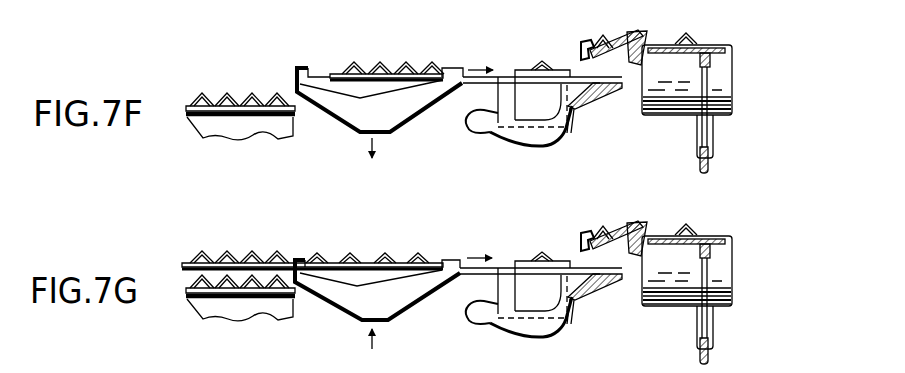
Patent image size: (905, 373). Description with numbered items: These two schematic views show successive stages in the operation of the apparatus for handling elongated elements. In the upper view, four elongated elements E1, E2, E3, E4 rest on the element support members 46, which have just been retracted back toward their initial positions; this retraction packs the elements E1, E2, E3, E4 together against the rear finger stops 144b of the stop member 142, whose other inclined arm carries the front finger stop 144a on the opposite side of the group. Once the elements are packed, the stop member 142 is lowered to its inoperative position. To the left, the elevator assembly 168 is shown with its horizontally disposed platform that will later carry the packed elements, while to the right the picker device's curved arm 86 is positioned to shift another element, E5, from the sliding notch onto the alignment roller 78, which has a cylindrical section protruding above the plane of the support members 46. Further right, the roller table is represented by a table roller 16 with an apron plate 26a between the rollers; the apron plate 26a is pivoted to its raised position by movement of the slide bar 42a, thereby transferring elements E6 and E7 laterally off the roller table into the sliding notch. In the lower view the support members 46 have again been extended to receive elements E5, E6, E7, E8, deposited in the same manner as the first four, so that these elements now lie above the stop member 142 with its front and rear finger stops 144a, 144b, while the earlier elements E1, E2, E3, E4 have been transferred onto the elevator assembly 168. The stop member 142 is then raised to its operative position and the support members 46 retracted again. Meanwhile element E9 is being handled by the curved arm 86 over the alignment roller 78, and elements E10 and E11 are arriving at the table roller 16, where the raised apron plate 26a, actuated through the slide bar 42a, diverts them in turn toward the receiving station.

In FIG. 7F, the table roller 16 is at (733, 88).
In FIG. 7G, the table roller 16 is at (705, 271).
In FIG. 7G, the apron plate 26a is at (707, 239).
In FIG. 7F, the slide bar 42a is at (713, 163).
In FIG. 7F, the element support member 46 is at (468, 85).
In FIG. 7G, the element support member 46 is at (470, 275).
In FIG. 7F, the alignment roller 78 is at (574, 134).
In FIG. 7G, the alignment roller 78 is at (594, 316).
In FIG. 7F, the curved arm 86 is at (537, 136).
In FIG. 7G, the curved arm 86 is at (533, 314).
In FIG. 7F, the stop member 142 is at (404, 125).
In FIG. 7G, the stop member 142 is at (403, 318).
In FIG. 7F, the front finger stop 144a is at (297, 67).
In FIG. 7G, the front finger stop 144a is at (297, 259).
In FIG. 7F, the rear finger stop 144b is at (454, 70).
In FIG. 7G, the rear finger stop 144b is at (449, 258).
In FIG. 7F, the elevator assembly 168 is at (234, 141).
In FIG. 7G, the elevator assembly 168 is at (224, 322).
In FIG. 7F, the elongated element E1 is at (355, 61).
In FIG. 7G, the elongated element E1 is at (200, 251).
In FIG. 7F, the elongated element E2 is at (381, 61).
In FIG. 7G, the elongated element E2 is at (227, 251).
In FIG. 7F, the elongated element E3 is at (406, 61).
In FIG. 7G, the elongated element E3 is at (252, 251).
In FIG. 7F, the elongated element E4 is at (433, 61).
In FIG. 7G, the elongated element E4 is at (278, 251).
In FIG. 7F, the elongated element E5 is at (541, 61).
In FIG. 7G, the elongated element E5 is at (317, 252).
In FIG. 7F, the elongated element E6 is at (601, 36).
In FIG. 7G, the elongated element E6 is at (350, 252).
In FIG. 7F, the elongated element E7 is at (688, 37).
In FIG. 7G, the elongated element E7 is at (385, 252).
In FIG. 7G, the elongated element E8 is at (419, 252).
In FIG. 7G, the elongated element E9 is at (540, 253).
In FIG. 7G, the elongated element E10 is at (601, 227).
In FIG. 7G, the elongated element E11 is at (687, 227).